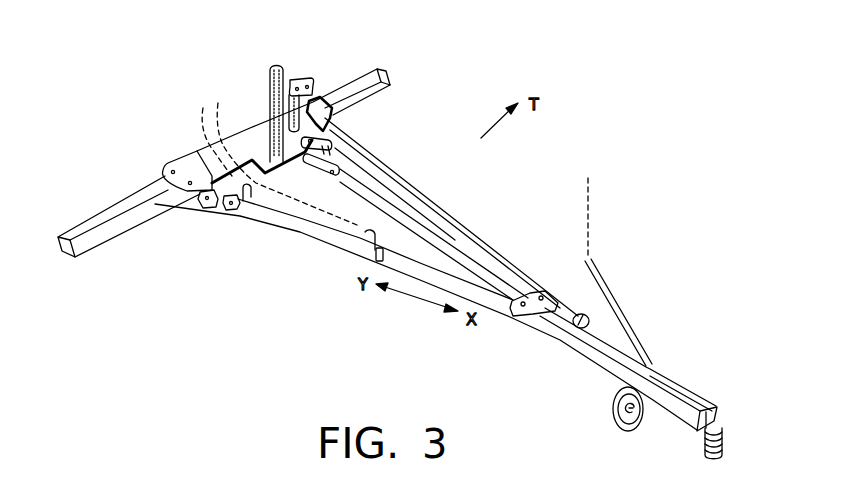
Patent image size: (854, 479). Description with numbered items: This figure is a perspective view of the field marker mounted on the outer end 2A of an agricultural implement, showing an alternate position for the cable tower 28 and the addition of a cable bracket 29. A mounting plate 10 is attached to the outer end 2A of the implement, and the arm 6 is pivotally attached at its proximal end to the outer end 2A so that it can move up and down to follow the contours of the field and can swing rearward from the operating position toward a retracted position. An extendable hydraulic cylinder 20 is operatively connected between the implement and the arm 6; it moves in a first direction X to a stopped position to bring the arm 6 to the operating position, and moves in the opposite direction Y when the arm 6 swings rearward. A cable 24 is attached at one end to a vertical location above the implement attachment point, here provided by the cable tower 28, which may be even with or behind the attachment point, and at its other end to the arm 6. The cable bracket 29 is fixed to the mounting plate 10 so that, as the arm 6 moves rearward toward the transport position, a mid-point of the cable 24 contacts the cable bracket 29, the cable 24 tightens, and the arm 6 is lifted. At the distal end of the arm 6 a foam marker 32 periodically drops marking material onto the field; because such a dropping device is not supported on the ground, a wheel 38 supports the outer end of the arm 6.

The outer end 2A is at (112, 239).
The mounting plate 10 is at (197, 162).
The cable bracket 29 is at (268, 76).
The cable tower 28 is at (298, 81).
The cable 24 is at (443, 212).
The hydraulic cylinder 20 is at (342, 258).
The arm 6 is at (570, 347).
The wheel 38 is at (611, 413).
The foam marker 32 is at (727, 423).